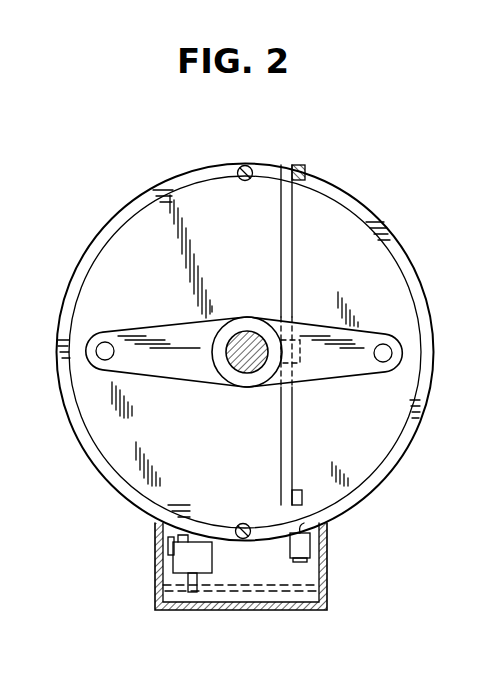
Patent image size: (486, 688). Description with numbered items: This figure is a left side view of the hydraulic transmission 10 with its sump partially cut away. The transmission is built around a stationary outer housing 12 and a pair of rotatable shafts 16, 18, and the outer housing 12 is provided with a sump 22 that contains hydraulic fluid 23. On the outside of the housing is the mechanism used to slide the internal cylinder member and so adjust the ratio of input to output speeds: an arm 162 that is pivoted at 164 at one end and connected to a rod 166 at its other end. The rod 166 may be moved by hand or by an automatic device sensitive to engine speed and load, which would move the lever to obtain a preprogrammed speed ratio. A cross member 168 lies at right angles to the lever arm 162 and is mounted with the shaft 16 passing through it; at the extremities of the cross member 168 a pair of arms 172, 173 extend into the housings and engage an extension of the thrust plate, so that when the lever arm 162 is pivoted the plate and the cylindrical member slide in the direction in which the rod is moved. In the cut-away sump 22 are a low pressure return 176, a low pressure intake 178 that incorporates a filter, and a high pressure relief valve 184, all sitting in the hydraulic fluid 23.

The hydraulic transmission 10 is at (366, 195).
The stationary outer housing 12 is at (392, 235).
The rotatable shaft 16 is at (237, 372).
The rotatable shaft 18 is at (0, 329).
The sump 22 is at (328, 572).
The hydraulic fluid 23 is at (240, 592).
The arm 162 is at (292, 272).
The pivot 164 is at (302, 497).
The rod 166 is at (300, 165).
The cross member 168 is at (172, 325).
The arm 172 is at (97, 347).
The arm 173 is at (392, 350).
The low pressure return 176 is at (168, 551).
The low pressure intake 178 is at (173, 594).
The high pressure relief valve 184 is at (313, 542).